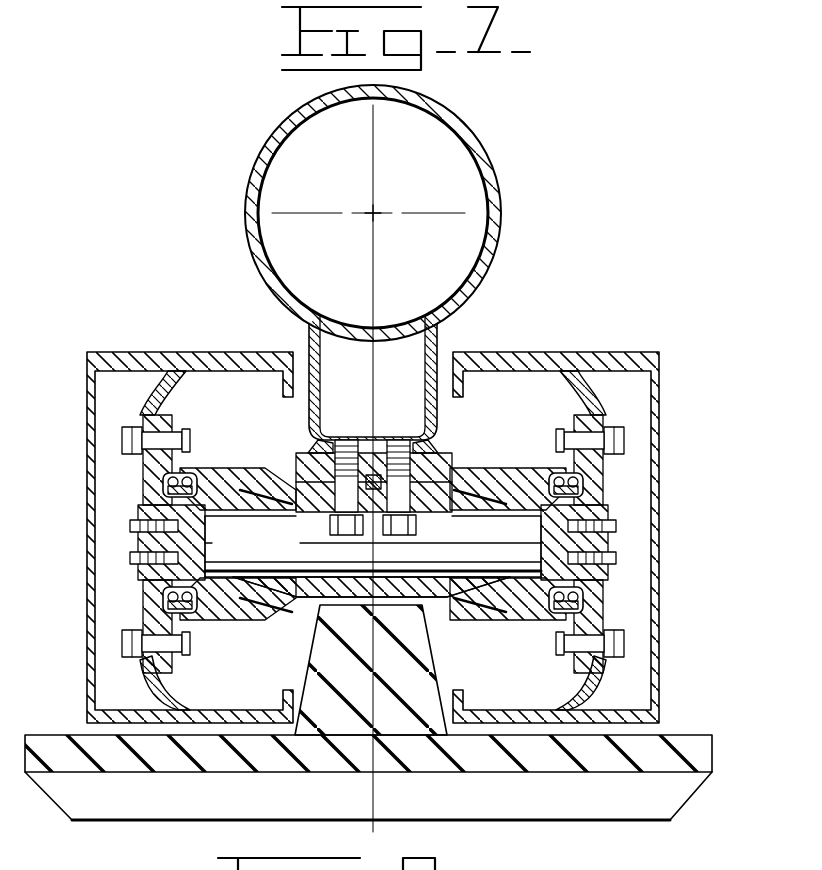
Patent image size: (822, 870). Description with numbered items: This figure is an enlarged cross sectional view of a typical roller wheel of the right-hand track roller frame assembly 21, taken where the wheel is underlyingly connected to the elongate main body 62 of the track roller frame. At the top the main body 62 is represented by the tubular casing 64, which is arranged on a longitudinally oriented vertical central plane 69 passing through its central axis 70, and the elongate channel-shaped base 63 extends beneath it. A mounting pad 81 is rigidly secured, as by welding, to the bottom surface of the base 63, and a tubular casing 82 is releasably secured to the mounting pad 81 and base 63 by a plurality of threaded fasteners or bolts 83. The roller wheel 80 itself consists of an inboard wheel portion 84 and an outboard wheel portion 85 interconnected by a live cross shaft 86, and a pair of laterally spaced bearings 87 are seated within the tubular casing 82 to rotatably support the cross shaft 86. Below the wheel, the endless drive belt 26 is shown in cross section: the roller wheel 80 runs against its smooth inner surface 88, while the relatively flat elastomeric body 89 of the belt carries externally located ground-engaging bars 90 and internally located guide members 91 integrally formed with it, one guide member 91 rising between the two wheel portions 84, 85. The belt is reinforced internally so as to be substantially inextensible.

The right-hand track roller frame assembly 21 is at (420, 212).
The elongate main body 62 is at (498, 171).
The tubular casing 64 is at (492, 253).
The vertical central plane 69 is at (374, 180).
The central axis 70 is at (372, 208).
The channel-shaped base 63 is at (432, 446).
The mounting pad 81 is at (446, 483).
The bolts 83 is at (416, 526).
The live cross shaft 86 is at (253, 543).
The tubular casing 82 is at (245, 478).
The bearings 87 is at (227, 438).
The roller wheels 80 is at (382, 522).
The inboard wheel portion 84 is at (166, 522).
The outboard wheel portion 85 is at (566, 352).
The smooth inner surface 88 is at (60, 735).
The guide members 91 is at (312, 648).
The elastomeric body 89 is at (42, 755).
The ground-engaging bars 90 is at (85, 800).
The endless drive belt 26 is at (390, 796).